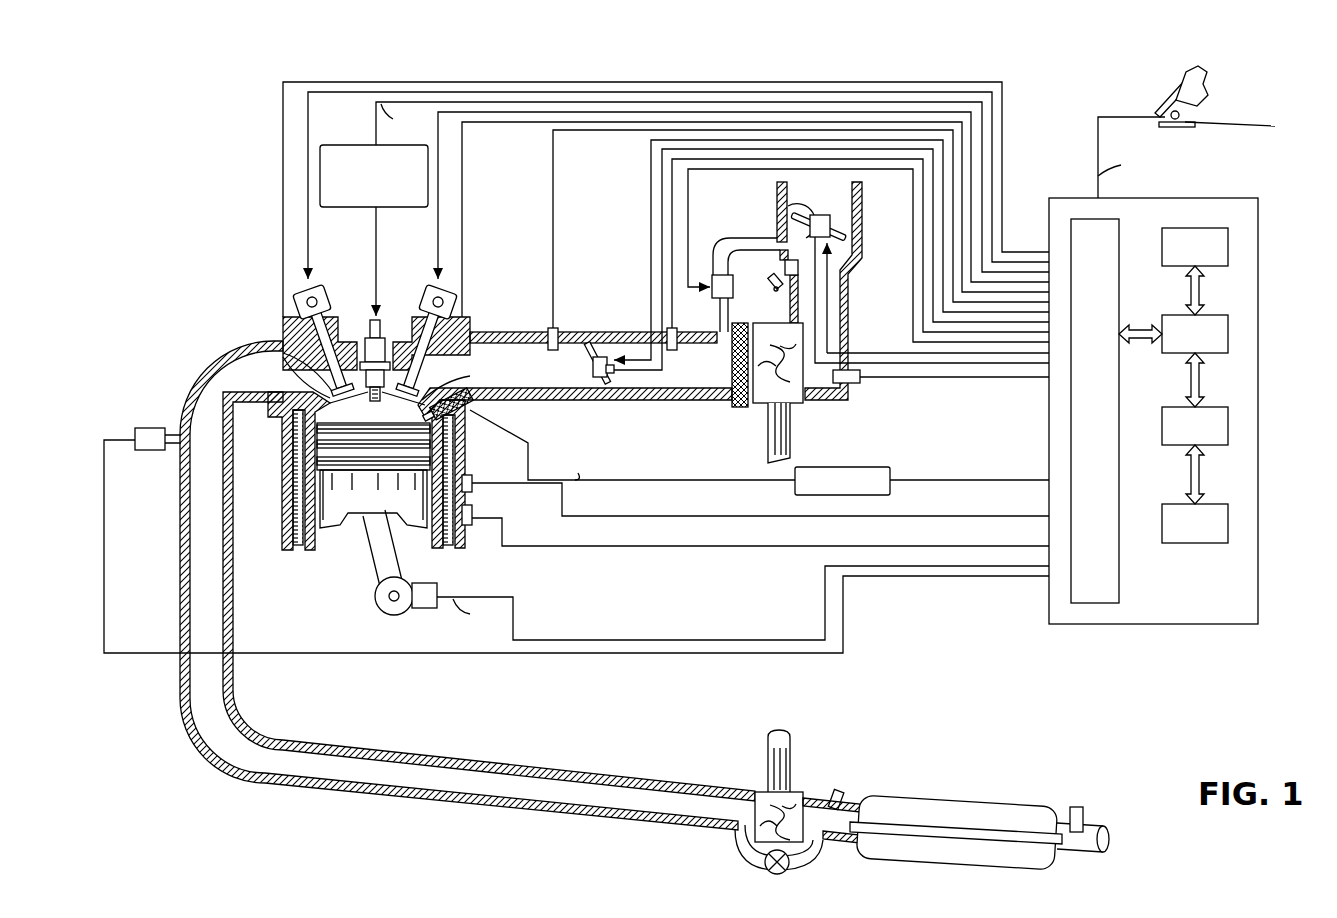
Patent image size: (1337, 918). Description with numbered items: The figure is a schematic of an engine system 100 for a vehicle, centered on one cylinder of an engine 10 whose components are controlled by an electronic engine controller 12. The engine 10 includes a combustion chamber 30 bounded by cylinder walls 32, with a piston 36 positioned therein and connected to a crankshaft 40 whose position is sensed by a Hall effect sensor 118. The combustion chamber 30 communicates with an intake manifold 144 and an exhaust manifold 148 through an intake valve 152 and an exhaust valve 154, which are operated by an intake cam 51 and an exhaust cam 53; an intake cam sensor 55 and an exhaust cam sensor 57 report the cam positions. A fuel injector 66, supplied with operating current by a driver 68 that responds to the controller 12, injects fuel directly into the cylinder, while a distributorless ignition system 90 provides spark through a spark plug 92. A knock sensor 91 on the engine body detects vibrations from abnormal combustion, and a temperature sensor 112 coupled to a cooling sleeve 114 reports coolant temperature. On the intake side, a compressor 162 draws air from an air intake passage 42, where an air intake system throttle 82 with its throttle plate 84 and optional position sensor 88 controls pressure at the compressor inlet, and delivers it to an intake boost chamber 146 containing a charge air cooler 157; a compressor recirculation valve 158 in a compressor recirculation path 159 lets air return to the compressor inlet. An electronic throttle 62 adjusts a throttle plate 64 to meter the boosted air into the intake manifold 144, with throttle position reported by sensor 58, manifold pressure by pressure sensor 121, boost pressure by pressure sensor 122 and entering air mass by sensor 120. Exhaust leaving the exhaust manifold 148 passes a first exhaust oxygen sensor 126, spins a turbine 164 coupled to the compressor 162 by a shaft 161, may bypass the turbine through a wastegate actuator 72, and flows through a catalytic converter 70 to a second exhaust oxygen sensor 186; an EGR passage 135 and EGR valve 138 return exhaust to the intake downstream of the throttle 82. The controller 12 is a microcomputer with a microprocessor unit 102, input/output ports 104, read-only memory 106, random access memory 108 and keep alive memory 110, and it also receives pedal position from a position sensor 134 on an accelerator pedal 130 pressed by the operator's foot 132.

The engine system 100 is at (143, 113).
The engine 10 is at (216, 270).
The electronic engine controller 12 is at (1258, 199).
The combustion chamber 30 is at (370, 408).
The cylinder walls 32 is at (320, 545).
The piston 36 is at (358, 500).
The crankshaft 40 is at (383, 613).
The air intake passage 42 is at (819, 291).
The intake cam 51 is at (428, 286).
The exhaust cam 53 is at (322, 286).
The intake cam sensor 55 is at (452, 302).
The exhaust cam sensor 57 is at (298, 300).
The throttle position sensor 58 is at (615, 375).
The electronic throttle 62 is at (590, 345).
The throttle plate 64 is at (606, 350).
The fuel injector 66 is at (481, 415).
The driver 68 is at (892, 483).
The catalytic converter 70 is at (860, 862).
The wastegate actuator 72 is at (765, 866).
The air intake system throttle 82 is at (790, 226).
The throttle plate 84 is at (781, 207).
The position sensor 88 is at (777, 229).
The distributorless ignition system 90 is at (335, 144).
The knock sensor 91 is at (473, 484).
The spark plug 92 is at (381, 318).
The microprocessor unit 102 is at (1228, 333).
The input/output ports 104 is at (1119, 229).
The read-only memory 106 is at (1228, 243).
The random access memory 108 is at (1228, 428).
The keep alive memory 110 is at (1228, 522).
The temperature sensor 112 is at (473, 518).
The cooling sleeve 114 is at (460, 535).
The Hall effect sensor 118 is at (420, 608).
The air mass sensor 120 is at (855, 383).
The pressure sensor 121 is at (548, 331).
The pressure sensor 122 is at (677, 340).
The first exhaust oxygen sensor 126 is at (130, 437).
The accelerator pedal 130 is at (1154, 101).
The foot 132 is at (1216, 80).
The position sensor 134 is at (1236, 135).
The EGR passage 135 is at (778, 292).
The EGR valve 138 is at (785, 268).
The intake manifold 144 is at (575, 374).
The intake boost chamber 146 is at (682, 369).
The exhaust manifold 148 is at (467, 585).
The intake valve 152 is at (450, 384).
The exhaust valve 154 is at (318, 396).
The charge air cooler 157 is at (733, 407).
The compressor recirculation valve 158 is at (713, 275).
The compressor recirculation path 159 is at (774, 284).
The shaft 161 is at (768, 425).
The compressor 162 is at (797, 406).
The turbine 164 is at (755, 794).
The second exhaust oxygen sensor 186 is at (1077, 806).